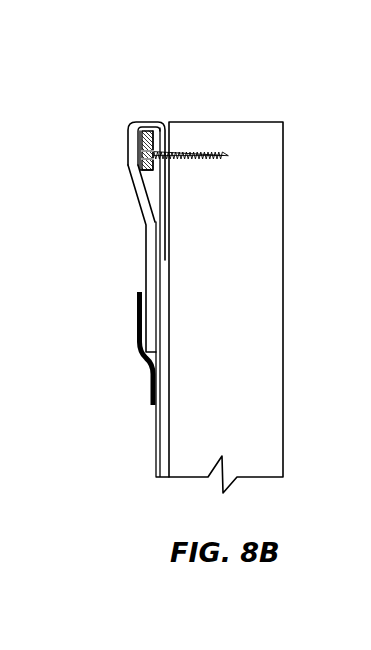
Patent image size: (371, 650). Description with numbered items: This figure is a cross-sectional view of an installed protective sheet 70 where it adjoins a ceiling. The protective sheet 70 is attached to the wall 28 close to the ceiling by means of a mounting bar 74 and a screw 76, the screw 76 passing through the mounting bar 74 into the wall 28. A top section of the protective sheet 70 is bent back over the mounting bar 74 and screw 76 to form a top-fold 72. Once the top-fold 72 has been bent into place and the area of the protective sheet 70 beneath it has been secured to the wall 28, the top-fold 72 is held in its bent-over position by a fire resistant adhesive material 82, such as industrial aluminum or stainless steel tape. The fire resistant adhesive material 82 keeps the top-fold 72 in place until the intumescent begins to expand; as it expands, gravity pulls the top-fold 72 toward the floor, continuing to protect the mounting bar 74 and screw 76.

The wall 28 is at (257, 133).
The protective sheet 70 is at (156, 440).
The top-fold 72 is at (146, 237).
The mounting bar 74 is at (143, 128).
The screw 76 is at (142, 143).
The fire resistant adhesive material 82 is at (145, 353).